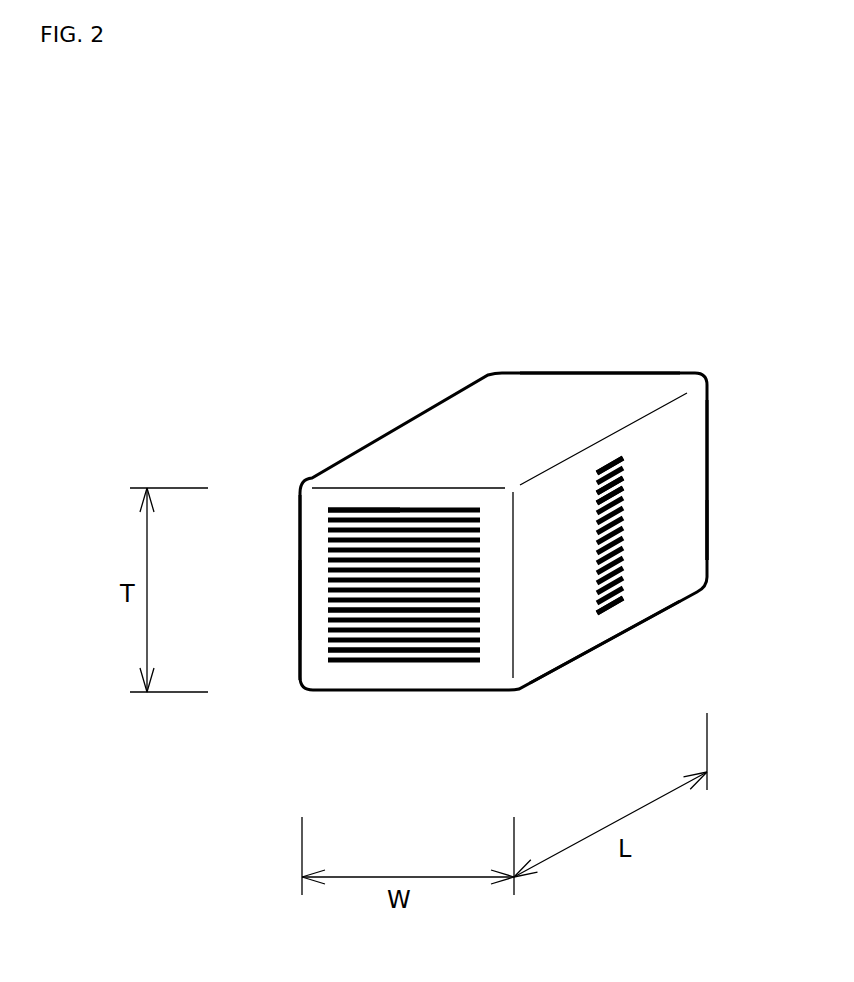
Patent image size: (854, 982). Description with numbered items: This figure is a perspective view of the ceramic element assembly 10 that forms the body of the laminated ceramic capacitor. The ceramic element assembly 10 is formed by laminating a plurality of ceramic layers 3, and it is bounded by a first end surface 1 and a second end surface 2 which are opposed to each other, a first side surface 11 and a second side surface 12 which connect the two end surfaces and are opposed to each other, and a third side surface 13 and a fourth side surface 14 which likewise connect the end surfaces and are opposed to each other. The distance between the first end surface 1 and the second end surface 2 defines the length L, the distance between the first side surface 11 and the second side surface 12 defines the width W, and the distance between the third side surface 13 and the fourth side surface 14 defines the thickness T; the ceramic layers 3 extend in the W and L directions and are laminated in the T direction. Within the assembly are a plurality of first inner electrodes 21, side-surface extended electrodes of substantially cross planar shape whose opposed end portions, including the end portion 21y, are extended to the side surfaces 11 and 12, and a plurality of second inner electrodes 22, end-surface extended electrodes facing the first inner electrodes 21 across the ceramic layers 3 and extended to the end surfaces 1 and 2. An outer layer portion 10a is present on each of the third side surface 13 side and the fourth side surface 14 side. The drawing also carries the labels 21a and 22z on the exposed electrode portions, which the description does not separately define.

The ceramic element assembly 10 is at (519, 335).
The outer layer portion 10a is at (418, 500).
The first end surface 1 is at (318, 632).
The second end surface 2 is at (710, 448).
The ceramic layers 3 is at (385, 652).
The first side surface 11 is at (302, 520).
The second side surface 12 is at (673, 525).
The third side surface 13 is at (483, 407).
The fourth side surface 14 is at (555, 670).
The first inner electrodes 21 is at (617, 595).
The end portions of first internal electrodes 21a is at (613, 462).
The end portion of first inner electrode 21y is at (625, 497).
The second inner electrodes 22 is at (360, 540).
The exposed portion of second internal electrode 22z is at (345, 513).